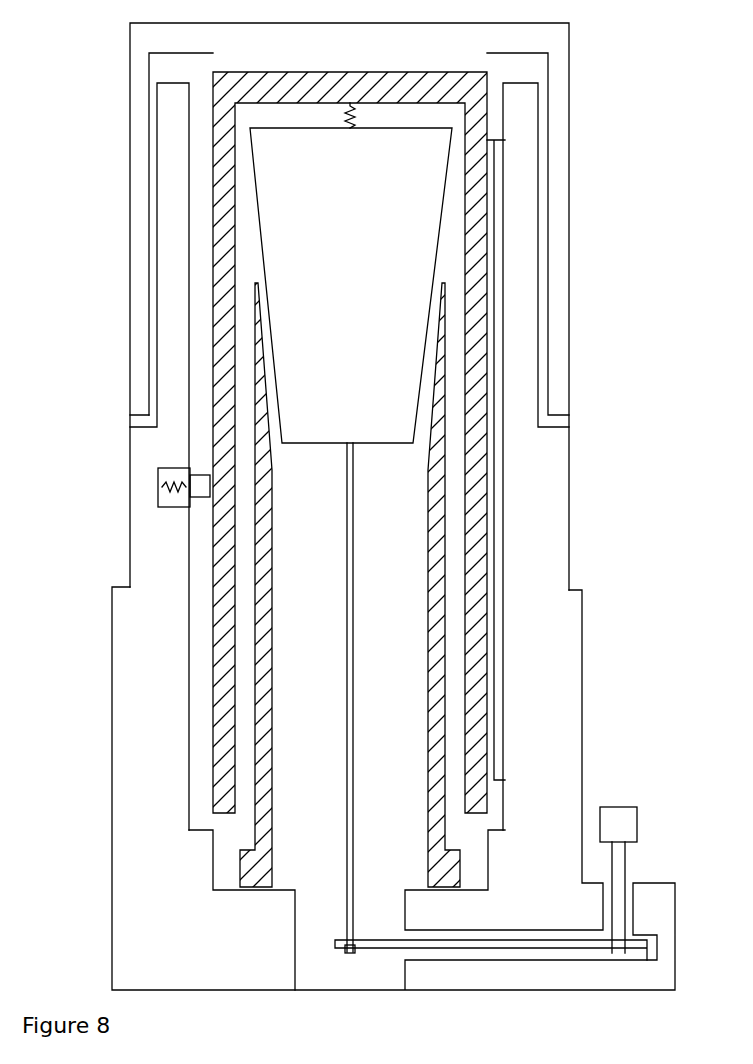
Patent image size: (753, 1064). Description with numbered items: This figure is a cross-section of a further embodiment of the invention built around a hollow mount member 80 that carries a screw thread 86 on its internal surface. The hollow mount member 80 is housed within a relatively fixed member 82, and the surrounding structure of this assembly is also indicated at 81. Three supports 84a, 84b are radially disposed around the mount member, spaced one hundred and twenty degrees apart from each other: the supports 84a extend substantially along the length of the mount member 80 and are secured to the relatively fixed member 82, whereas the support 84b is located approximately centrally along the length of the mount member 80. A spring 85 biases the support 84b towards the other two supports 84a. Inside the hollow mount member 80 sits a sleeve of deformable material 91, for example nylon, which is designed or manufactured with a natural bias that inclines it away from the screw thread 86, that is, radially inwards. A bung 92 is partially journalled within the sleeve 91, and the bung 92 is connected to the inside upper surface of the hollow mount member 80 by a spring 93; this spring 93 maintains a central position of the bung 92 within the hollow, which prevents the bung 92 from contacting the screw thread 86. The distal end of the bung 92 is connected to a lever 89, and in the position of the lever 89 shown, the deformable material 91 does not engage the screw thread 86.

The hollow mount member 80 is at (478, 98).
The outer housing 81 is at (570, 138).
The relatively fixed member 82 is at (112, 927).
The supports 84a is at (494, 511).
The support 84b is at (197, 500).
The spring 85 is at (158, 487).
The screw thread 86 is at (235, 157).
The lever 89 is at (625, 807).
The sleeve of deformable material 91 is at (432, 554).
The bung 92 is at (330, 396).
The spring 93 is at (352, 101).